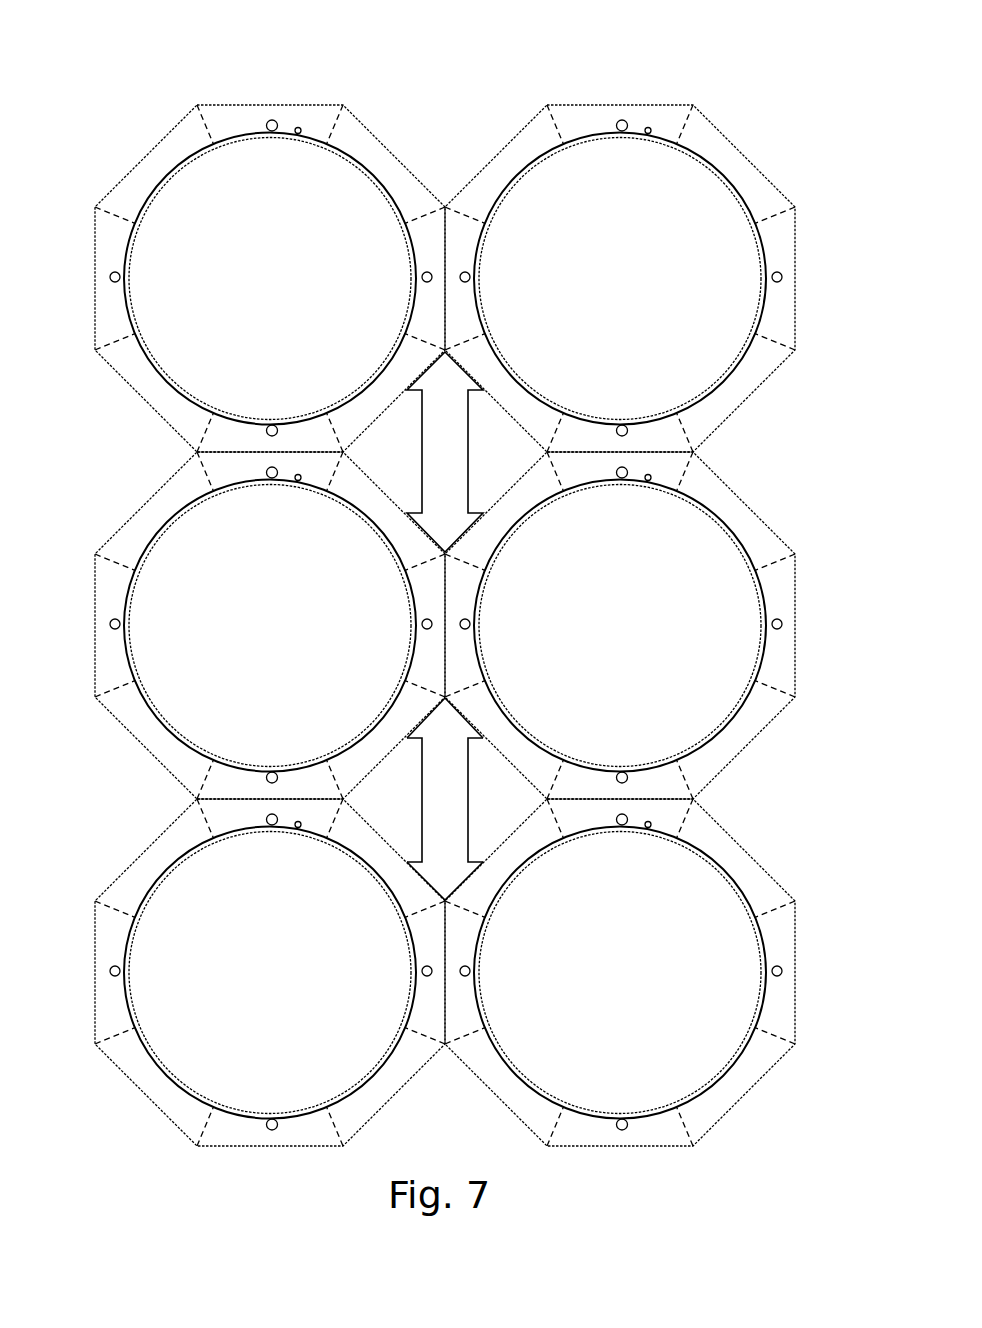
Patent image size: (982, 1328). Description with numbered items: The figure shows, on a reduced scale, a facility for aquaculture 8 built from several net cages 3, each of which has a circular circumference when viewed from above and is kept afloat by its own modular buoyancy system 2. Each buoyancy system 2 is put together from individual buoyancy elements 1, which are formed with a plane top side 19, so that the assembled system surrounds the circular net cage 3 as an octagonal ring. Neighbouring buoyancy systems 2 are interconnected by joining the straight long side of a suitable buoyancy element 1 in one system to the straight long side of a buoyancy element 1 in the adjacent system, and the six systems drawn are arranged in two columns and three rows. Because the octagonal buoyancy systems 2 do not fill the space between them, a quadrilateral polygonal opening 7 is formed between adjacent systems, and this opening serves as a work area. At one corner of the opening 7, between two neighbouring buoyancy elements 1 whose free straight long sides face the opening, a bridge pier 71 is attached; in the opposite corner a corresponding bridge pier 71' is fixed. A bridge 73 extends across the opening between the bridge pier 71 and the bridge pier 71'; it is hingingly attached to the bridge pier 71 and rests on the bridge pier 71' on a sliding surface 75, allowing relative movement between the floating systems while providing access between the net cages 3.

The buoyancy element 1 is at (244, 95).
The modular buoyancy system 2 is at (330, 95).
The net cage 3 is at (213, 240).
The plane top side 19 is at (145, 180).
The facility for aquaculture 8 is at (791, 132).
The polygonal opening 7 is at (505, 457).
The bridge pier 71 is at (277, 854).
The bridge pier 71' is at (255, 733).
The bridge 73 is at (450, 783).
The sliding surface 75 is at (450, 732).